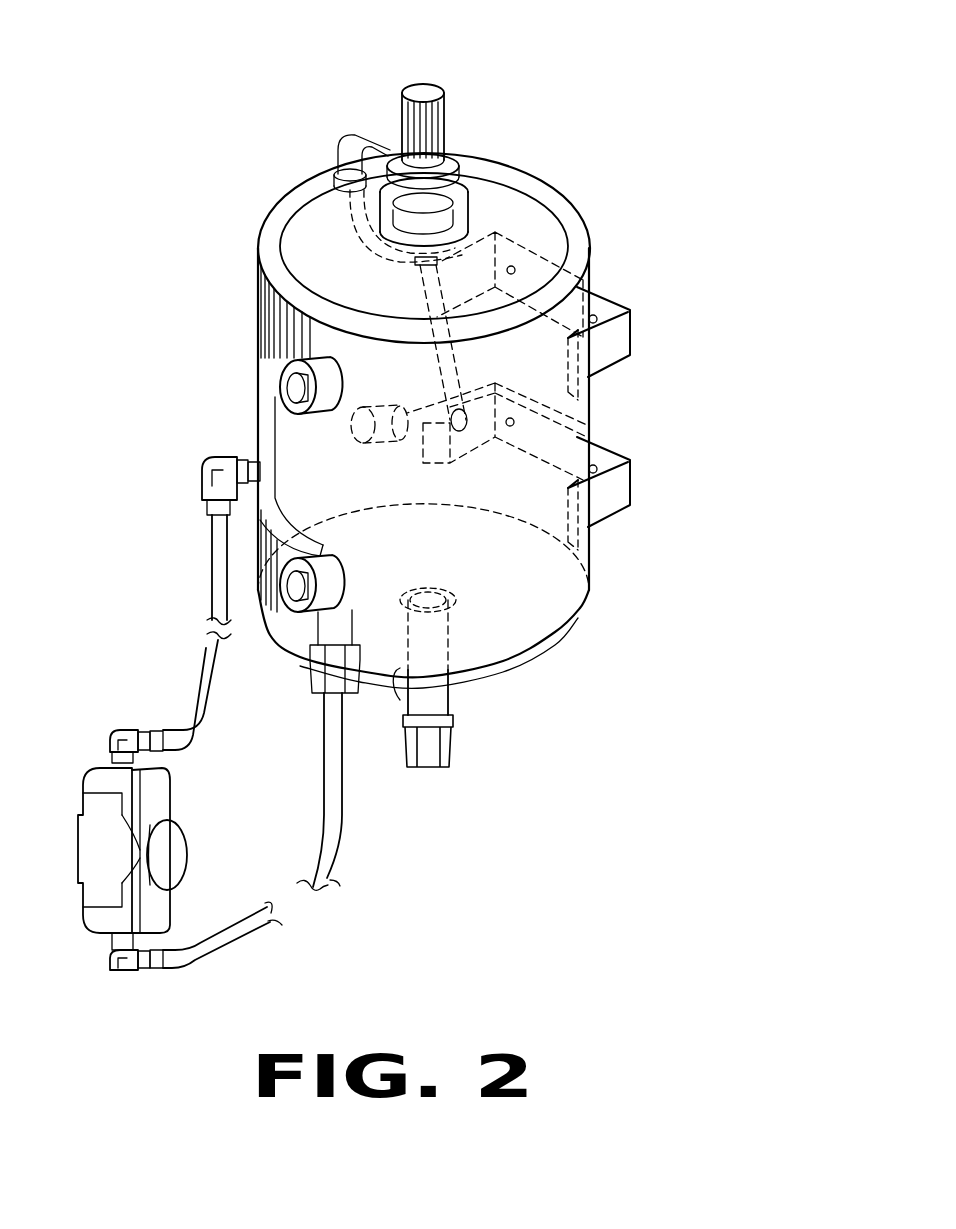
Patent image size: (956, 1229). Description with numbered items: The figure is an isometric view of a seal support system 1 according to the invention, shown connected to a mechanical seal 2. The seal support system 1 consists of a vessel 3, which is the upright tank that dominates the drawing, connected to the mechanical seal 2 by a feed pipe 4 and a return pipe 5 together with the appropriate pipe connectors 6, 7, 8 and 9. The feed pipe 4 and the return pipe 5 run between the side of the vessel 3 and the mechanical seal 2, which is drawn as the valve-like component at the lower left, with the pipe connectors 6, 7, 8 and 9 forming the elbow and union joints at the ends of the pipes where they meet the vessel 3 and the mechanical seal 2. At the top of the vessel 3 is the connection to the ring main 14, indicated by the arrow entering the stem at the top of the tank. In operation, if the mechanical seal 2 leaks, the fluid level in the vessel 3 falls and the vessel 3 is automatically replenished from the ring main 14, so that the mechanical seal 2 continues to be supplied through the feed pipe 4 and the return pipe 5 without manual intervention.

The seal support system 1 is at (567, 205).
The mechanical seal 2 is at (170, 817).
The vessel 3 is at (588, 420).
The feed pipe 4 is at (332, 875).
The return pipe 5 is at (203, 680).
The pipe connector 6 is at (203, 460).
The pipe connector 7 is at (347, 690).
The pipe connector 8 is at (163, 947).
The pipe connector 9 is at (115, 732).
The ring main 14 is at (427, 76).